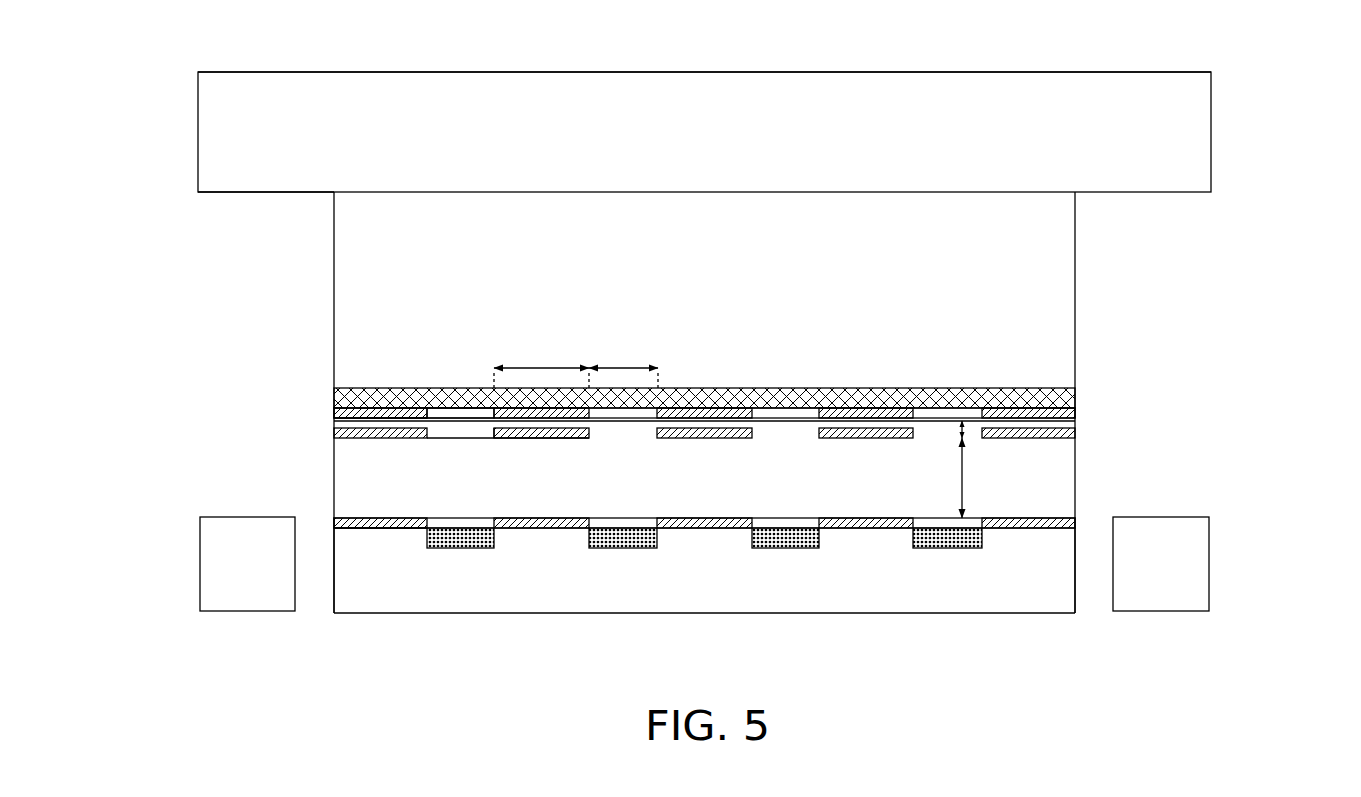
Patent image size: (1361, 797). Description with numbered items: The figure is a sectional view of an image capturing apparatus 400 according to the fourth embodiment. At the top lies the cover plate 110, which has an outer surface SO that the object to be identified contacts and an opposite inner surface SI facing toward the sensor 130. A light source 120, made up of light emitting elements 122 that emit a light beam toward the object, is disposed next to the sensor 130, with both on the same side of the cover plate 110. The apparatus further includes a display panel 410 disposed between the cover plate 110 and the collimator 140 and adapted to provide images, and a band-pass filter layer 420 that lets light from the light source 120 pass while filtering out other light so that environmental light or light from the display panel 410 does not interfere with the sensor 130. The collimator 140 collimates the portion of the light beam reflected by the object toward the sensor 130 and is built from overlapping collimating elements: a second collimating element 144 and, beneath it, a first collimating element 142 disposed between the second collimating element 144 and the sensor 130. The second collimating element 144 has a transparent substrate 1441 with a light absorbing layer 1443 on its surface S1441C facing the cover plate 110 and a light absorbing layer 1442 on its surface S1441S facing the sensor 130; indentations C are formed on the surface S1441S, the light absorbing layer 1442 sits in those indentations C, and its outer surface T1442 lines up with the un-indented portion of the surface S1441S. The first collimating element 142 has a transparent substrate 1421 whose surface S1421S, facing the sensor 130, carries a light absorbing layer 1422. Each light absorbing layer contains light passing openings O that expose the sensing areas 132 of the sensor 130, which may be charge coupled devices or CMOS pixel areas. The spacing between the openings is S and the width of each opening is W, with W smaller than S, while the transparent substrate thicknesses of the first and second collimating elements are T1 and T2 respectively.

The cover plate 110 is at (1200, 158).
The outer surface SO is at (212, 69).
The inner surface SI is at (203, 194).
The display panel 410 is at (1063, 302).
The band-pass filter layer 420 is at (1068, 399).
The collimator 140 is at (621, 456).
The second collimating element 144 is at (643, 423).
The light absorbing layer 1443 is at (333, 413).
The transparent substrate 1441 is at (333, 422).
The light absorbing layer 1442 is at (333, 432).
The first collimating element 142 is at (643, 494).
The transparent substrate 1421 is at (338, 493).
The light absorbing layer 1422 is at (333, 523).
The sensor 130 is at (1012, 600).
The sensing areas 132 is at (948, 548).
The light source 120 is at (704, 564).
The light emitting elements 122 is at (200, 572).
The surface S1441C is at (395, 416).
The surface S1441S is at (433, 441).
The surface S1421S is at (392, 531).
The light passing openings O is at (453, 521).
The indentations C is at (492, 433).
The spacing S is at (541, 363).
The width W is at (623, 363).
The transparent substrate thickness T1 is at (976, 478).
The transparent substrate thickness T2 is at (965, 428).
The outer surface T1442 is at (538, 441).
The image capturing apparatus 400 is at (1268, 706).